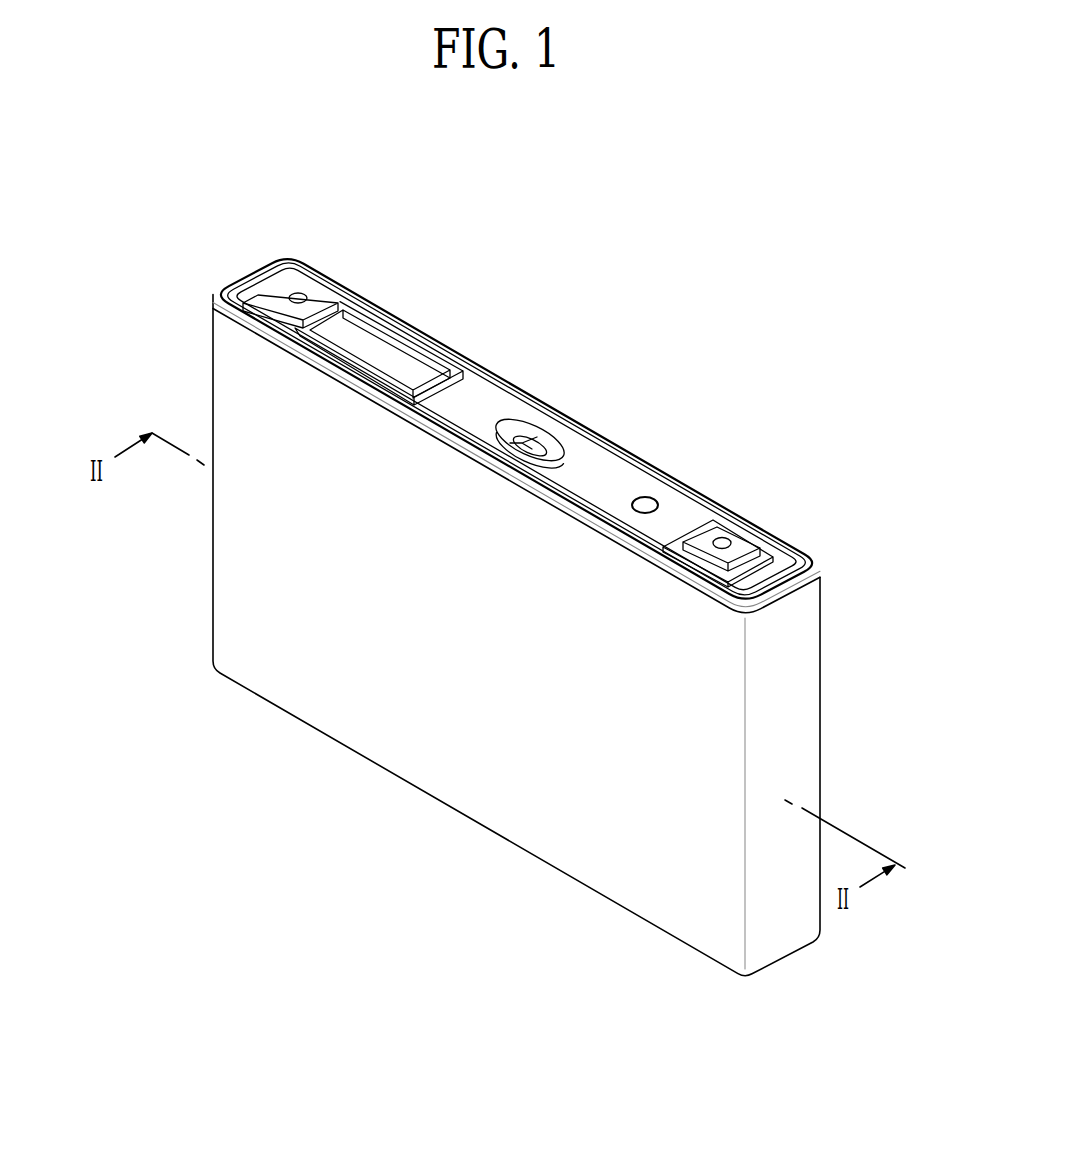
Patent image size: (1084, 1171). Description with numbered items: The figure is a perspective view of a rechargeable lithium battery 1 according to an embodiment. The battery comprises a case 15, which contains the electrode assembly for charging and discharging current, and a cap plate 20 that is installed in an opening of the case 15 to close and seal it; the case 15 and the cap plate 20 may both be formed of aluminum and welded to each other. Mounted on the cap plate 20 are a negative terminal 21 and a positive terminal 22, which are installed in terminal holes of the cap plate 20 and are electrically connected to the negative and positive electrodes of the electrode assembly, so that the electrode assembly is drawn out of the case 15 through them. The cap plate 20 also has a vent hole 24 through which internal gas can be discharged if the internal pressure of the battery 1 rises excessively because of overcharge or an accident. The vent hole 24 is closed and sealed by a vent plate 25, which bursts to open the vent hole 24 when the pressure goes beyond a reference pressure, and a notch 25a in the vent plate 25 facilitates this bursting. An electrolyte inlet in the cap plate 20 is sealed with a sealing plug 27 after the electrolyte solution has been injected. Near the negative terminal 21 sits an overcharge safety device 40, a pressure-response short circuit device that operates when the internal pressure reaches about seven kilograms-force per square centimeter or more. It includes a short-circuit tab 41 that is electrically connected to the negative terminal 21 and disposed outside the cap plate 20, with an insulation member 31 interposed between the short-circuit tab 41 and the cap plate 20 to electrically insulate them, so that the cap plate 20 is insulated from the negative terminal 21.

The rechargeable lithium battery 1 is at (608, 214).
The case 15 is at (434, 765).
The cap plate 20 is at (486, 398).
The negative terminal 21 is at (305, 276).
The positive terminal 22 is at (722, 517).
The vent hole 24 is at (518, 425).
The vent plate 25 is at (537, 445).
The notch 25a is at (541, 458).
The sealing plug 27 is at (648, 505).
The insulation member 31 is at (372, 318).
The overcharge safety device 40 is at (397, 325).
The short-circuit tab 41 is at (428, 372).